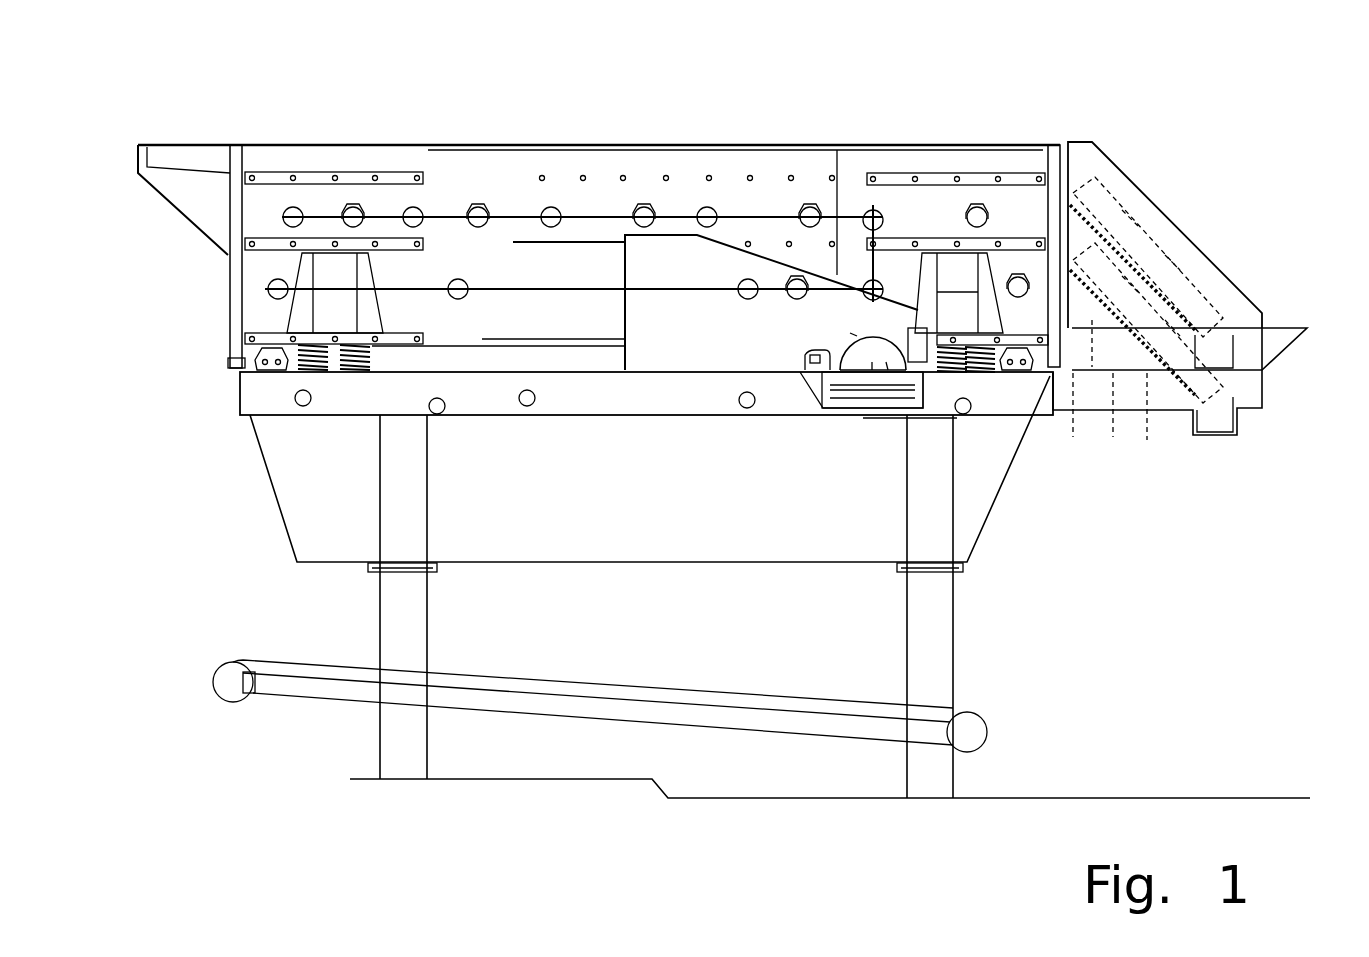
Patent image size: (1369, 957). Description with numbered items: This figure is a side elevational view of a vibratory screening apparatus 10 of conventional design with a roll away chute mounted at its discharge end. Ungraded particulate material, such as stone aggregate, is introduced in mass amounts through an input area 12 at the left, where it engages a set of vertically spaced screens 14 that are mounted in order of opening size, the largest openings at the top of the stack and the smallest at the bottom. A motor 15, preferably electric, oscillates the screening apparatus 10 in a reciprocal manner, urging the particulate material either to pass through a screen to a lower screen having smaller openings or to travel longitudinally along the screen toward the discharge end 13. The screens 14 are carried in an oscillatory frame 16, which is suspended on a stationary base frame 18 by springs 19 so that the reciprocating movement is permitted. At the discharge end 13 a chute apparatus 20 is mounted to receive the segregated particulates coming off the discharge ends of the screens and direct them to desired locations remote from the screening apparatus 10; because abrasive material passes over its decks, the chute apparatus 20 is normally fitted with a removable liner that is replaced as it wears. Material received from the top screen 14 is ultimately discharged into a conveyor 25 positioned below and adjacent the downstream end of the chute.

The vibratory screening apparatus 10 is at (358, 115).
The input area 12 is at (182, 145).
The discharge end 13 is at (1030, 144).
The screens 14 is at (611, 128).
The motor 15 is at (853, 333).
The oscillatory frame 16 is at (230, 302).
The base frame 18 is at (625, 563).
The springs 19 is at (368, 357).
The chute apparatus 20 is at (1190, 211).
The conveyor 25 is at (1232, 352).